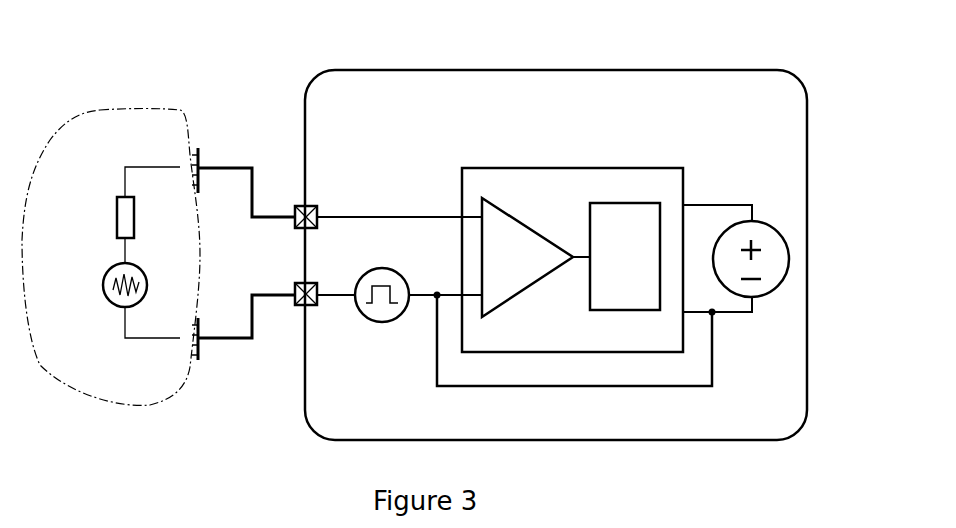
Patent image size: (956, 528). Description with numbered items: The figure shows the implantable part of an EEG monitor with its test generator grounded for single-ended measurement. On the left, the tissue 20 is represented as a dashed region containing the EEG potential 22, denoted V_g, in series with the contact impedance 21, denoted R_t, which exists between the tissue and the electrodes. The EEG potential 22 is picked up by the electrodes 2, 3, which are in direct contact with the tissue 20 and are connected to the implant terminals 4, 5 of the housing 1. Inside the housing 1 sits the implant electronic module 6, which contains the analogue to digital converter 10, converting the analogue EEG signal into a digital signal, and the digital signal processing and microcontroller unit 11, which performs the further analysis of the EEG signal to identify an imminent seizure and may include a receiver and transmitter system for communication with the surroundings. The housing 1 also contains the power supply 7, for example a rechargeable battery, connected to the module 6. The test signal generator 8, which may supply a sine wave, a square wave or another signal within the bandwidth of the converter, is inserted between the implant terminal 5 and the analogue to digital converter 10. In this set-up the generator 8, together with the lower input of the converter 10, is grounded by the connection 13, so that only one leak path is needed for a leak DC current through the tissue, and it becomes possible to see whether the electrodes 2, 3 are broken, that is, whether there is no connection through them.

The housing 1 is at (596, 70).
The electrode 2 is at (198, 150).
The electrode 3 is at (200, 357).
The implant terminal 4 is at (292, 208).
The implant terminal 5 is at (292, 310).
The implant electronic module 6 is at (483, 166).
The power supply 7 is at (768, 297).
The test signal generator 8 is at (389, 322).
The analogue to digital converter 10 is at (517, 220).
The digital signal processing and microcontroller unit 11 is at (617, 203).
The connection 13 is at (552, 387).
The tissue 20 is at (52, 150).
The contact impedance 21 is at (115, 240).
The EEG potential 22 is at (116, 308).